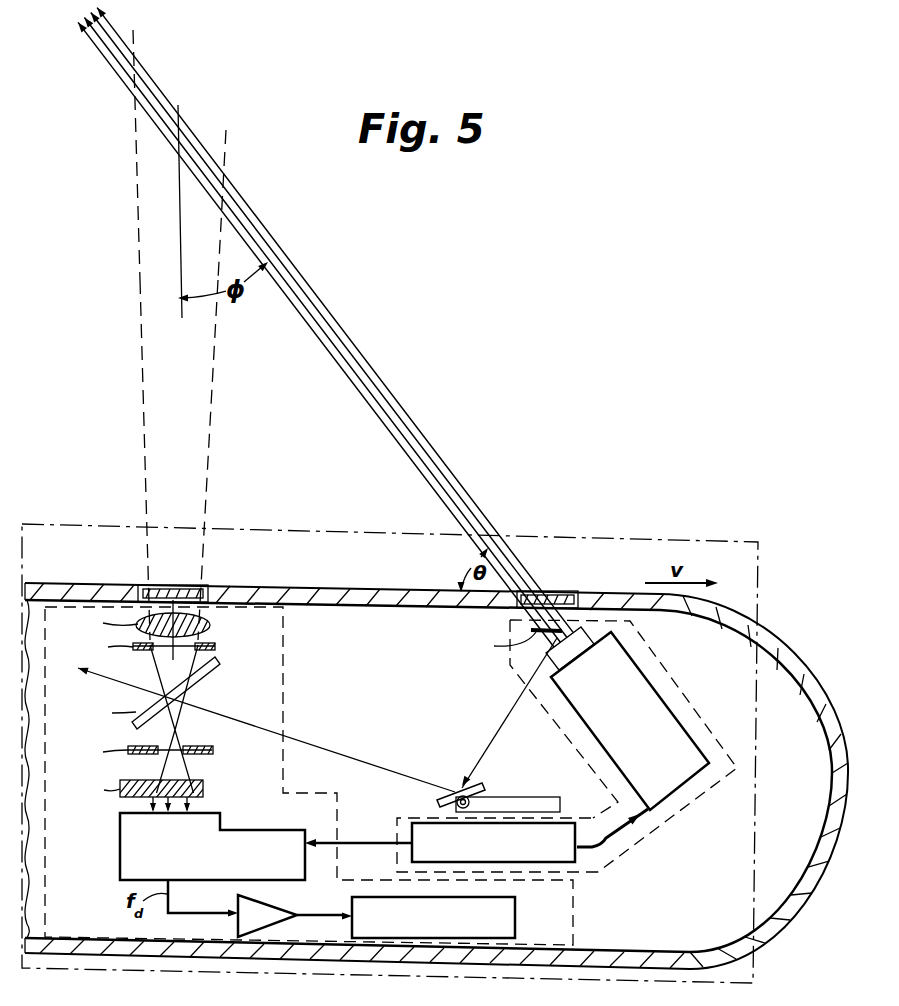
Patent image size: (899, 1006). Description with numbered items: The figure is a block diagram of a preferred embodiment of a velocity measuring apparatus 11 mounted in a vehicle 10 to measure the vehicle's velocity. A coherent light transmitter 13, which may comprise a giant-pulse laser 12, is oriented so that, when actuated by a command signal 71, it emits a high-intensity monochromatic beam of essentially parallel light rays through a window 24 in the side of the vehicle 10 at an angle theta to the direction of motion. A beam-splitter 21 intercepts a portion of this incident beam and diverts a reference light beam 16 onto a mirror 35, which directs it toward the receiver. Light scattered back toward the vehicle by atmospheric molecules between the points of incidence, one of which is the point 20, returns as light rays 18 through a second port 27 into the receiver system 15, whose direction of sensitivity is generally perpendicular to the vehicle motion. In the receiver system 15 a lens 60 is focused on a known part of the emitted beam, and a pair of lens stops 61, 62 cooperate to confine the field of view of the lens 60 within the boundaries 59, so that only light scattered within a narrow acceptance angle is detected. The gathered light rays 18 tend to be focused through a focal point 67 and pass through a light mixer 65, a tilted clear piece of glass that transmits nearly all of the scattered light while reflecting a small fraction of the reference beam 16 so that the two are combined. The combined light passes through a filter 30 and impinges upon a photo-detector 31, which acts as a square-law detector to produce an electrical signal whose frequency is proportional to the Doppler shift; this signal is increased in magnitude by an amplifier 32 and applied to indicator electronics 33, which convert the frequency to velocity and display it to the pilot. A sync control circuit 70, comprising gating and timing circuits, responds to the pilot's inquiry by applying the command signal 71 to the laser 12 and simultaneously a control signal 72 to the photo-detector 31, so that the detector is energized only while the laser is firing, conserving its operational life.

The vehicle 10 is at (770, 645).
The velocity measuring apparatus 11 is at (697, 540).
The giant-pulse laser 12 is at (644, 675).
The coherent light transmitter 13 is at (684, 701).
The receiver system 15 is at (283, 664).
The reference light beam 16 is at (127, 686).
The light rays 18 is at (158, 663).
The point of incidence 20 is at (227, 163).
The beam-splitter 21 is at (540, 635).
The window 24 is at (566, 593).
The second port 27 is at (187, 590).
The filter 30 is at (205, 789).
The photo-detector 31 is at (242, 830).
The amplifier 32 is at (284, 910).
The indicator electronics 33 is at (516, 910).
The mirror 35 is at (556, 797).
The boundaries 59 is at (142, 384).
The lens 60 is at (208, 624).
The lens stop 61 is at (215, 647).
The lens stop 62 is at (213, 750).
The light mixer 65 is at (212, 672).
The focal point 67 is at (178, 731).
The sync control circuit 70 is at (578, 858).
The command signal 71 is at (606, 840).
The control signal 72 is at (351, 843).